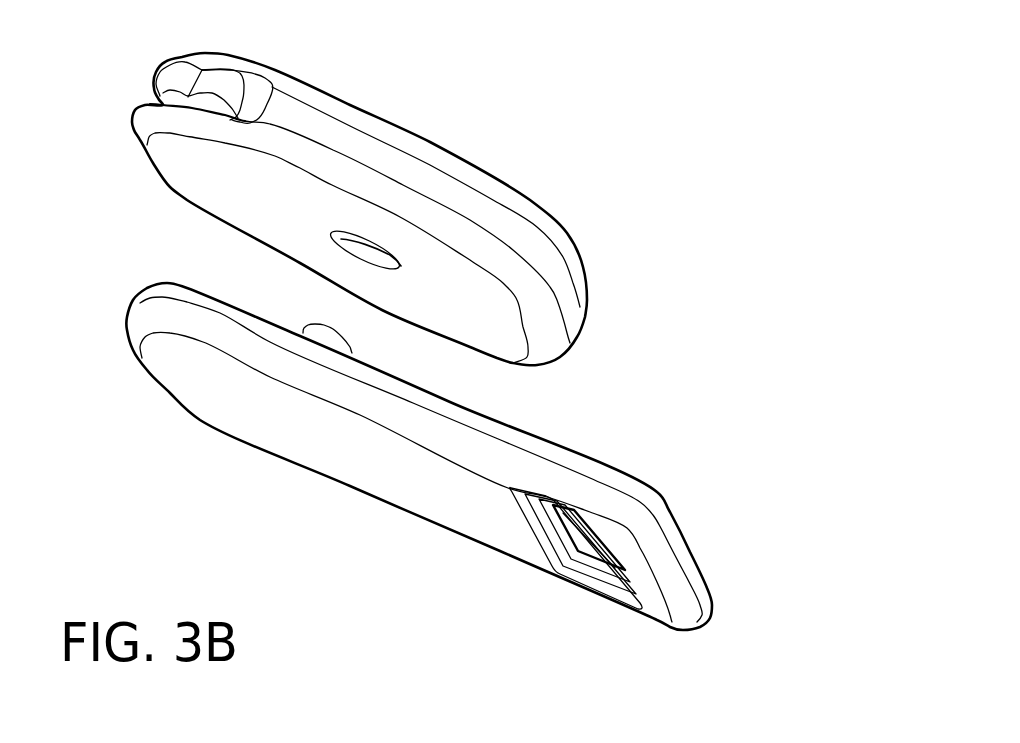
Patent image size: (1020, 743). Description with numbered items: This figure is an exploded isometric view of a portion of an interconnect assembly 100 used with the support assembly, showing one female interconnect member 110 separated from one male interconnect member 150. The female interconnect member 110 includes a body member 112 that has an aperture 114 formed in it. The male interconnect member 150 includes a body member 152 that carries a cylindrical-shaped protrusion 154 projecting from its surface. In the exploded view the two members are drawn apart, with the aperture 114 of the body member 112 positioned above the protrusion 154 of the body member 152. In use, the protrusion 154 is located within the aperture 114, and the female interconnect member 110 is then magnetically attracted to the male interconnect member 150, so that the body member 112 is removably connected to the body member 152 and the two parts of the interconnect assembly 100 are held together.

The interconnect assembly 100 is at (156, 429).
The female interconnect member 110 is at (458, 112).
The body member 112 is at (508, 175).
The aperture 114 is at (356, 248).
The male interconnect member 150 is at (455, 575).
The body member 152 is at (361, 514).
The cylindrical-shaped protrusion 154 is at (338, 333).